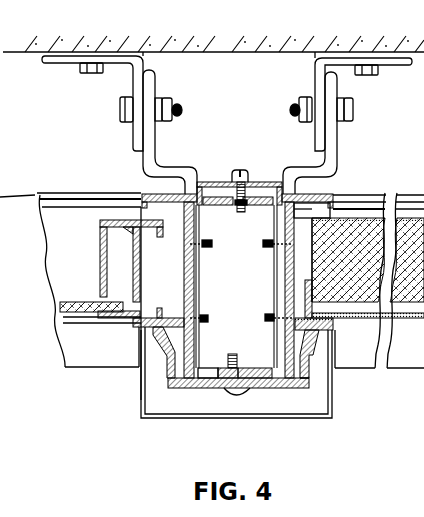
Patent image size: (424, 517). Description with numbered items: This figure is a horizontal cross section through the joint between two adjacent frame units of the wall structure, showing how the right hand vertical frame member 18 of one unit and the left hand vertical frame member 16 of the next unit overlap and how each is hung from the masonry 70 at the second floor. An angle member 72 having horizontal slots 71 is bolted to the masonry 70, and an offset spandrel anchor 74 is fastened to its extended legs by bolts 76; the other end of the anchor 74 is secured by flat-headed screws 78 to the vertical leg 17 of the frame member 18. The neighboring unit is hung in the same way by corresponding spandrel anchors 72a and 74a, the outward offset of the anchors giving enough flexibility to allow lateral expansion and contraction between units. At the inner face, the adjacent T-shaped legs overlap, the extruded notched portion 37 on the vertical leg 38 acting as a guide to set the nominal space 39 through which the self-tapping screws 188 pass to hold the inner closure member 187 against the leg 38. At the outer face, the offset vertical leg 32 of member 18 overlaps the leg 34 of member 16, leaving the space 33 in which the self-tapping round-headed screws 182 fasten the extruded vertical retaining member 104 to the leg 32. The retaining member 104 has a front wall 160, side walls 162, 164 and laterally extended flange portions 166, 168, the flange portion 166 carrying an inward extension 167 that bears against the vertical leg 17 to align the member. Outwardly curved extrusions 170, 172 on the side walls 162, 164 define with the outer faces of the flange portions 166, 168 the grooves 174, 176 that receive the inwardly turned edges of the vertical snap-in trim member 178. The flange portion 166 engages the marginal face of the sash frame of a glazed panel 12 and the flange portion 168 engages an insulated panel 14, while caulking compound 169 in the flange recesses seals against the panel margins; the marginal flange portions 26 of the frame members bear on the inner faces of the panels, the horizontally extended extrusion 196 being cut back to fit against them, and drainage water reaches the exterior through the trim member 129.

The masonry 70 is at (251, 53).
The angle member 72 is at (65, 61).
The spandrel anchor 72a is at (392, 65).
The horizontal slots 71 is at (84, 73).
The bolts 76 is at (118, 110).
The offset spandrel anchor 74 is at (157, 163).
The spandrel anchor 74a is at (340, 145).
The right hand vertical frame member 18 is at (150, 192).
The cover plate 187 is at (222, 182).
The self-tapping screws 188 is at (248, 178).
The space 39 is at (252, 175).
The extruded notched portion 37 is at (212, 206).
The vertical leg 38 is at (262, 206).
The vertical leg 17 is at (190, 283).
The flat-headed screws 78 is at (200, 245).
The groove 176 is at (265, 322).
The front wall 160 is at (270, 392).
The space 33 is at (250, 388).
The leg 34 is at (272, 383).
The vertical leg 32 is at (240, 368).
The vertical retaining member 104 is at (176, 418).
The vertical snap-in trim member 178 is at (212, 421).
The self-tapping round-headed screws 182 is at (183, 390).
The side wall 162 is at (167, 373).
The groove 174 is at (176, 339).
The outwardly curved extrusion 172 is at (317, 352).
The side wall 164 is at (310, 377).
The outwardly curved extrusion 170 is at (158, 343).
The flange portion 166 is at (133, 328).
The caulking compound 169 is at (181, 297).
The inward extension 167 is at (345, 327).
The marginal flange portions 26 is at (143, 215).
The glazed panel 12 is at (63, 317).
The trim member 129 is at (83, 368).
The horizontally extended extrusion 196 is at (52, 193).
The left hand vertical frame member 16 is at (325, 192).
The insulated panel 14 is at (398, 330).
The flange portion 168 is at (337, 332).